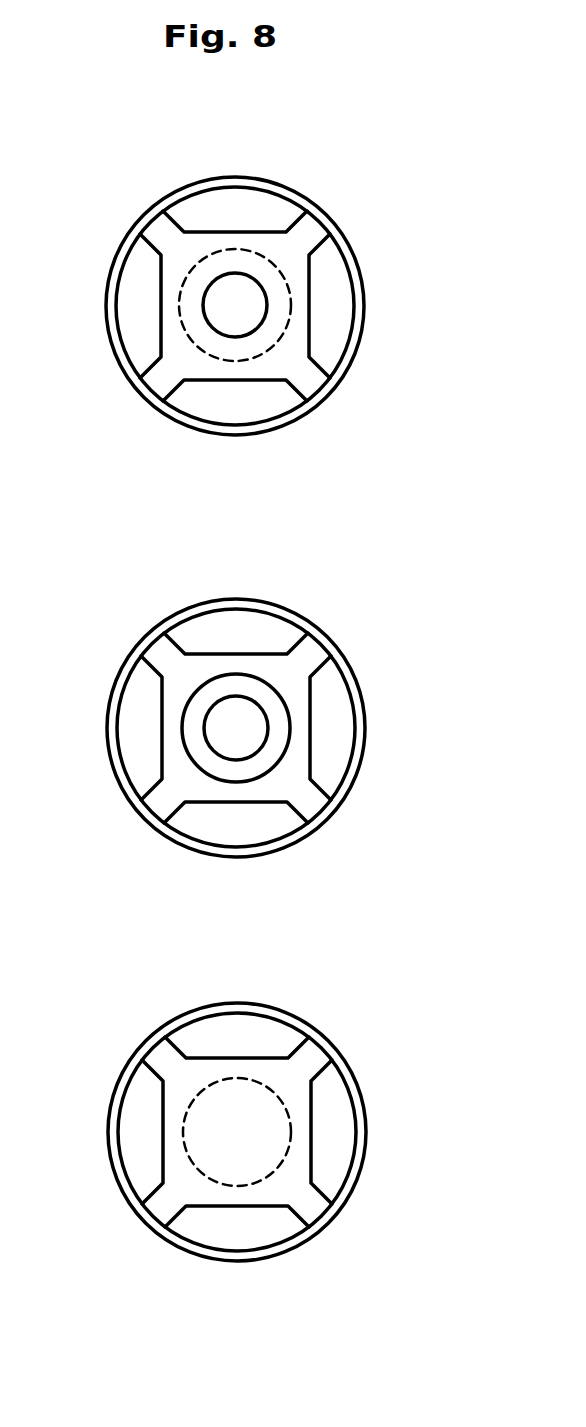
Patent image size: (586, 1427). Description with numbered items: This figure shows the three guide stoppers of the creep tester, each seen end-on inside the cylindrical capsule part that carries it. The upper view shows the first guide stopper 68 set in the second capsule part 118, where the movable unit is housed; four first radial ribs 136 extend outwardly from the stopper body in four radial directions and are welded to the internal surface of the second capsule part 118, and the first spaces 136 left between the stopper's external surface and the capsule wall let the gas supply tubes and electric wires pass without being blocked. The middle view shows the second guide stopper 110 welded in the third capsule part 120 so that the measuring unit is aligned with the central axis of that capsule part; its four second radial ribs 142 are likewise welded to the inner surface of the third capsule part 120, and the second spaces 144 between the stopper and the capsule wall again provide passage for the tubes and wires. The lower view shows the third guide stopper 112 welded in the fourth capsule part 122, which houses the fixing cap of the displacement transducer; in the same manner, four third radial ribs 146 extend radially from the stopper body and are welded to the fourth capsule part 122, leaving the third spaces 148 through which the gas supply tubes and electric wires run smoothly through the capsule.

The second capsule part 118 is at (236, 180).
The first radial ribs 136 is at (157, 232).
The first guide stopper 68 is at (145, 308).
The second guide stopper 110 is at (276, 646).
The third capsule part 120 is at (263, 637).
The second spaces 144 is at (220, 643).
The second radial ribs 142 is at (167, 660).
The third guide stopper 112 is at (293, 1033).
The fourth capsule part 122 is at (192, 1008).
The third spaces 148 is at (250, 1033).
The third radial ribs 146 is at (168, 1070).